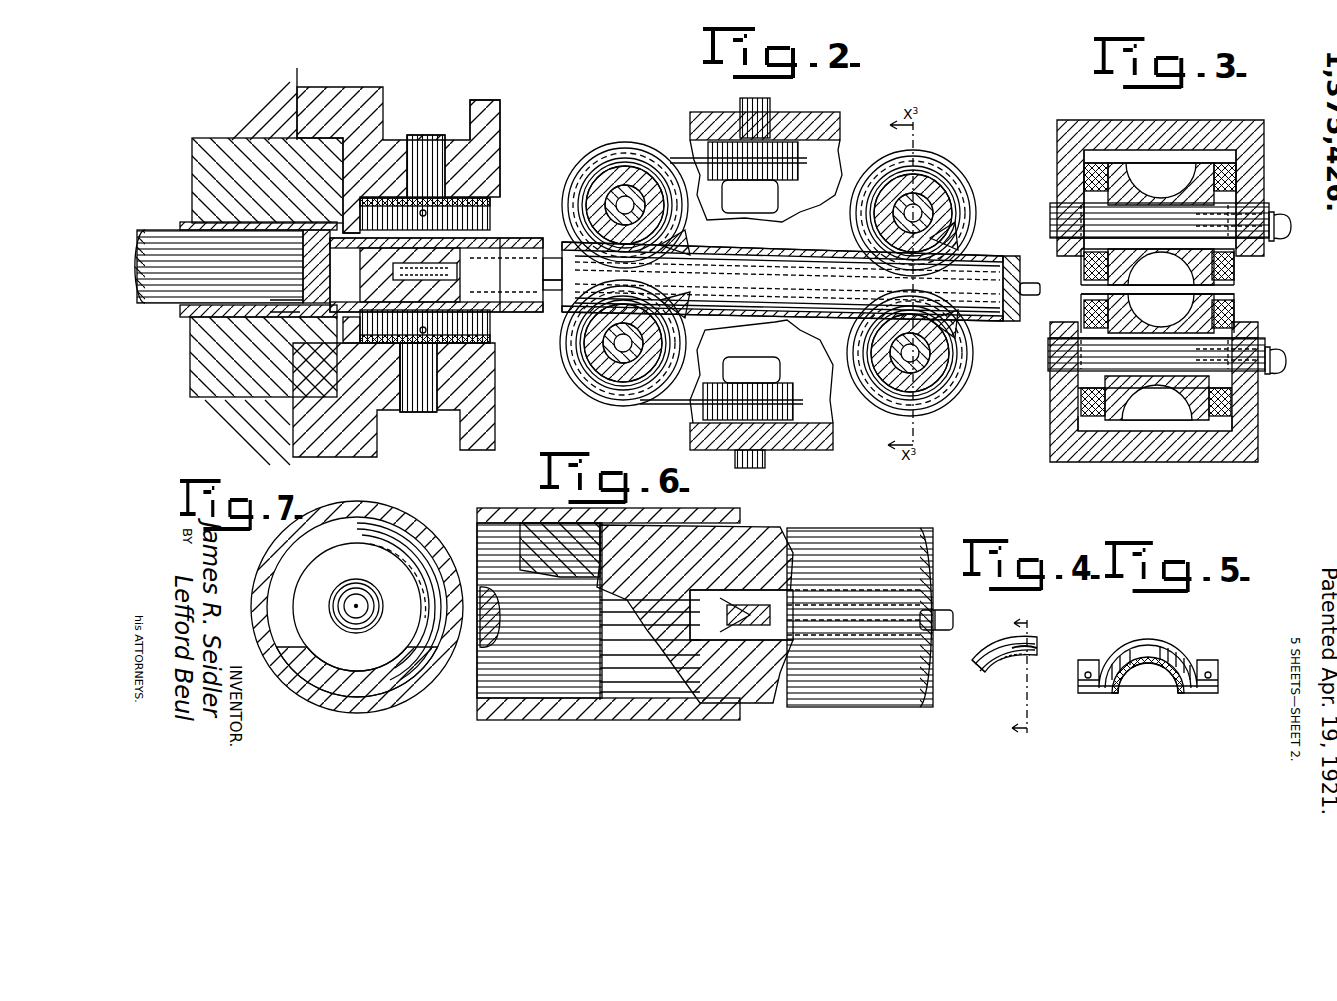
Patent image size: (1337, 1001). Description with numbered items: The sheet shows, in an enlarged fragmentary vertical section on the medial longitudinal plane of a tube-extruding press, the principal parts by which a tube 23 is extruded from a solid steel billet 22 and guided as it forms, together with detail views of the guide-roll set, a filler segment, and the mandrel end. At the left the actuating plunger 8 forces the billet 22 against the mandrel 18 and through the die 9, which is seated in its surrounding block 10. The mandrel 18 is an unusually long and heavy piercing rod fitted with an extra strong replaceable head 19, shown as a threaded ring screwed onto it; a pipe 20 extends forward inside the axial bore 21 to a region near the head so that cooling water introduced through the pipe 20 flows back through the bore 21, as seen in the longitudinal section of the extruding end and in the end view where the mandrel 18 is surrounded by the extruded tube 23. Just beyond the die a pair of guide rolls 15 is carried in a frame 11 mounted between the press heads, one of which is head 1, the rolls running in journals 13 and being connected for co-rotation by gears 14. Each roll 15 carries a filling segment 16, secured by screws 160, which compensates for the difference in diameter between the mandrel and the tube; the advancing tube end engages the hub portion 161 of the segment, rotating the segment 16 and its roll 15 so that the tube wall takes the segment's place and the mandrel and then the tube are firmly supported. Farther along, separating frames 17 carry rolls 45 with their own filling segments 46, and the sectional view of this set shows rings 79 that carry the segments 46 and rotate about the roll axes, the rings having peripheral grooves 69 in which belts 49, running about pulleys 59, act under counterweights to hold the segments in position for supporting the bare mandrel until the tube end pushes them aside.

In FIG. 2, the head member 1 is at (300, 82).
In FIG. 2, the actuating plunger 8 is at (168, 286).
In FIG. 2, the die 9 is at (190, 222).
In FIG. 2, the block 10 is at (225, 150).
In FIG. 2, the frame 11 is at (496, 113).
In FIG. 2, the journals 13 is at (420, 150).
In FIG. 3, the journals 13 is at (1050, 210).
In FIG. 2, the gears 14 is at (383, 193).
In FIG. 2, the guide rolls 15 is at (355, 226).
In FIG. 2, the filling segments 16 is at (490, 215).
In FIG. 4, the filling segments 16 is at (1003, 680).
In FIG. 5, the filling segments 16 is at (1198, 668).
In FIG. 2, the screws 160 is at (428, 212).
In FIG. 4, the hub portion 161 is at (1033, 655).
In FIG. 5, the hub portion 161 is at (1150, 668).
In FIG. 2, the separating frames 17 is at (806, 125).
In FIG. 3, the separating frames 17 is at (1092, 120).
In FIG. 2, the mandrel 18 is at (500, 240).
In FIG. 6, the mandrel 18 is at (862, 545).
In FIG. 7, the mandrel 18 is at (351, 598).
In FIG. 6, the replaceable head 19 is at (545, 540).
In FIG. 7, the replaceable head 19 is at (280, 568).
In FIG. 2, the pipe 20 is at (552, 280).
In FIG. 6, the pipe 20 is at (953, 620).
In FIG. 2, the axial bore 21 is at (548, 260).
In FIG. 6, the axial bore 21 is at (935, 612).
In FIG. 2, the billet 22 is at (270, 315).
In FIG. 2, the extruded tube 23 is at (525, 313).
In FIG. 6, the extruded tube 23 is at (740, 515).
In FIG. 7, the extruded tube 23 is at (412, 530).
In FIG. 2, the rolls 45 is at (601, 160).
In FIG. 3, the rolls 45 is at (1156, 196).
In FIG. 2, the filling segments 46 is at (681, 252).
In FIG. 3, the filling segments 46 is at (1145, 312).
In FIG. 2, the belts 49 is at (672, 158).
In FIG. 2, the pulleys 59 is at (740, 136).
In FIG. 3, the grooves 69 is at (1228, 163).
In FIG. 3, the rings 79 is at (1097, 163).